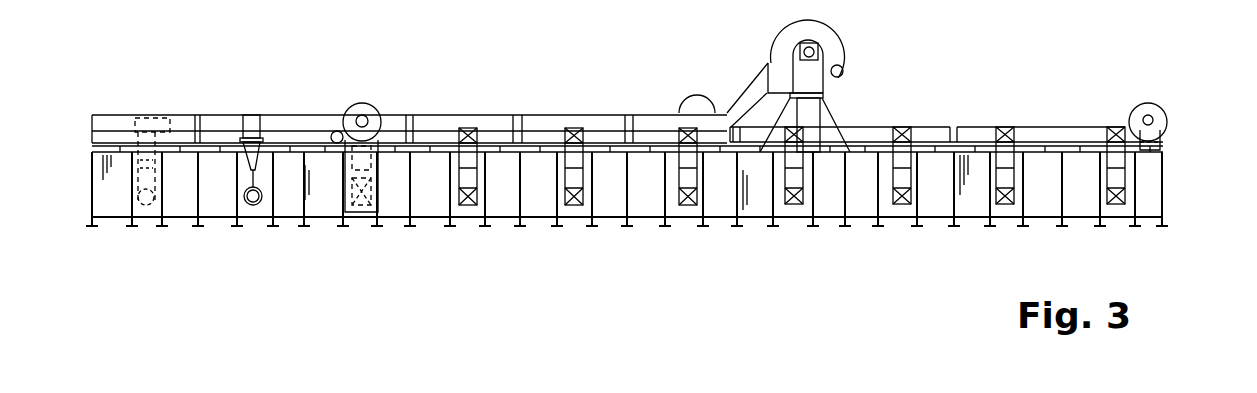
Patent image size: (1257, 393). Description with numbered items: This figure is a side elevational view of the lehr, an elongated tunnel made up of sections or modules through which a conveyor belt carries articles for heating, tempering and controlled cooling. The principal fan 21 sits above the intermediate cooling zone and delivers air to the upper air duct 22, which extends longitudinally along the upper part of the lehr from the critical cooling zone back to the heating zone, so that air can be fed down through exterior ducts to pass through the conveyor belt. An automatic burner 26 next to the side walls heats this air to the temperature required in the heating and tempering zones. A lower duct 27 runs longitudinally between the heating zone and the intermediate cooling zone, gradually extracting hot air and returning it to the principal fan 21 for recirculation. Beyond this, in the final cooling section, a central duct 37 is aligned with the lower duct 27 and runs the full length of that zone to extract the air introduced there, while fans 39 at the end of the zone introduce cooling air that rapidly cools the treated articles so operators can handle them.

The principal fan 21 is at (840, 42).
The upper air duct 22 is at (596, 120).
The automatic burner 26 is at (145, 208).
The lower duct 27 is at (90, 140).
The central duct 37 is at (1082, 130).
The fan 39 is at (1162, 118).